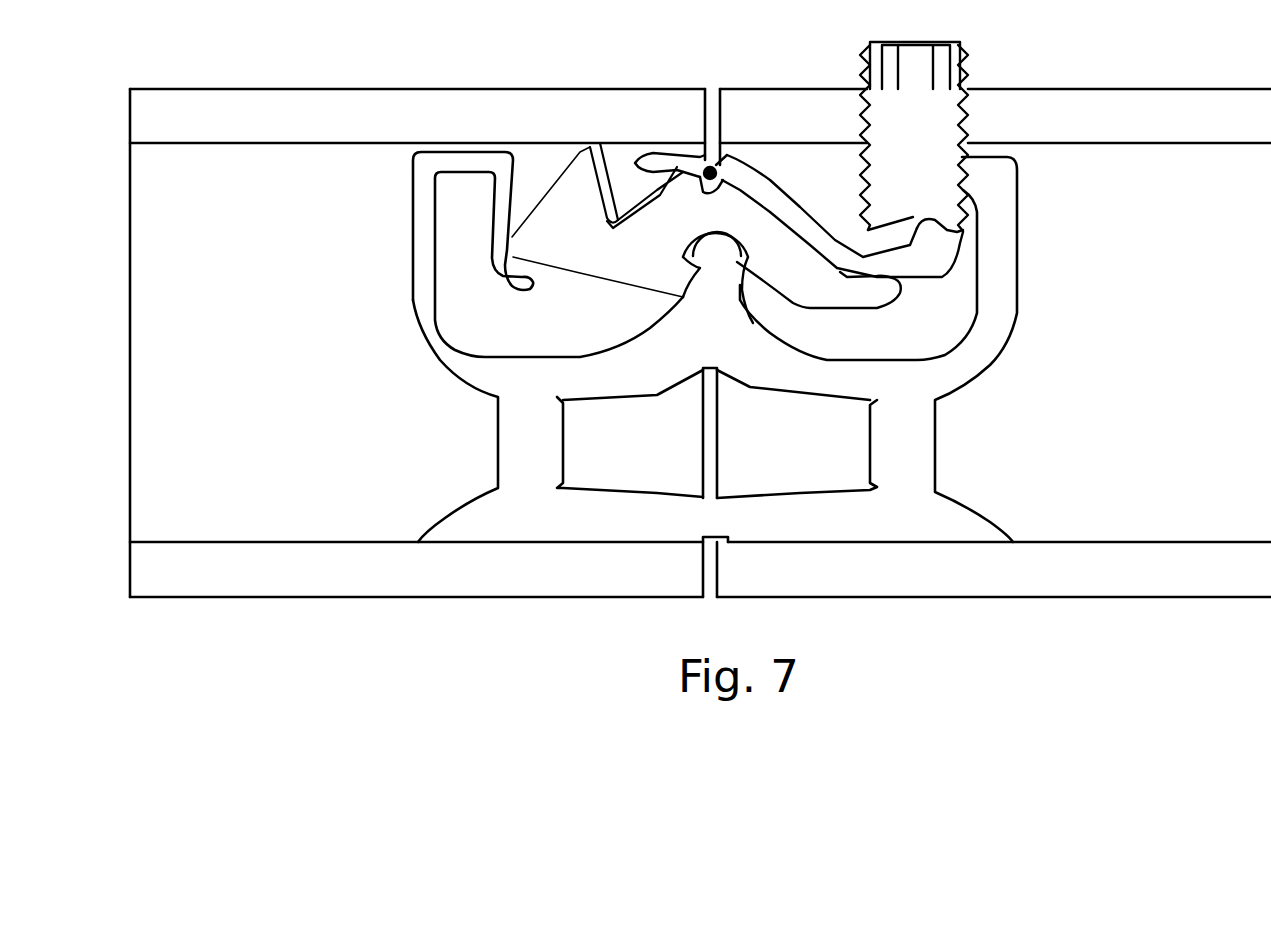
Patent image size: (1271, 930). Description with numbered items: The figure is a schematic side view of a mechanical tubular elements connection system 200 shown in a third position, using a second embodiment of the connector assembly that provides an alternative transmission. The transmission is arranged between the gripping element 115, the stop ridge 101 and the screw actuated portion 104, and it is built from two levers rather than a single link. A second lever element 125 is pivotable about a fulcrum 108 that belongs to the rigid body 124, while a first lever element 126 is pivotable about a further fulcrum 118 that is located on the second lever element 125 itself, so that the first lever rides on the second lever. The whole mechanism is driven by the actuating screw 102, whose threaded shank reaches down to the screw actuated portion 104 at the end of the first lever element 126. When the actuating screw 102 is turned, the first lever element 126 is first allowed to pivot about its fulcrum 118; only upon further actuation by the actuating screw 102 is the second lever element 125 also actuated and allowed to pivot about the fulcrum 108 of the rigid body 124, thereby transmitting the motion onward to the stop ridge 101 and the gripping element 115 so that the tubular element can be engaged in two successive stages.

The mechanical tubular elements connection system 200 is at (356, 632).
The actuating screw 102 is at (914, 136).
The screw actuated portion 104 is at (940, 239).
The stop ridge 101 is at (732, 147).
The fulcrum 118 is at (720, 168).
The gripping element 115 is at (619, 127).
The first lever element 126 is at (800, 207).
The second lever element 125 is at (819, 283).
The fulcrum 108 is at (718, 277).
The rigid body 124 is at (715, 347).